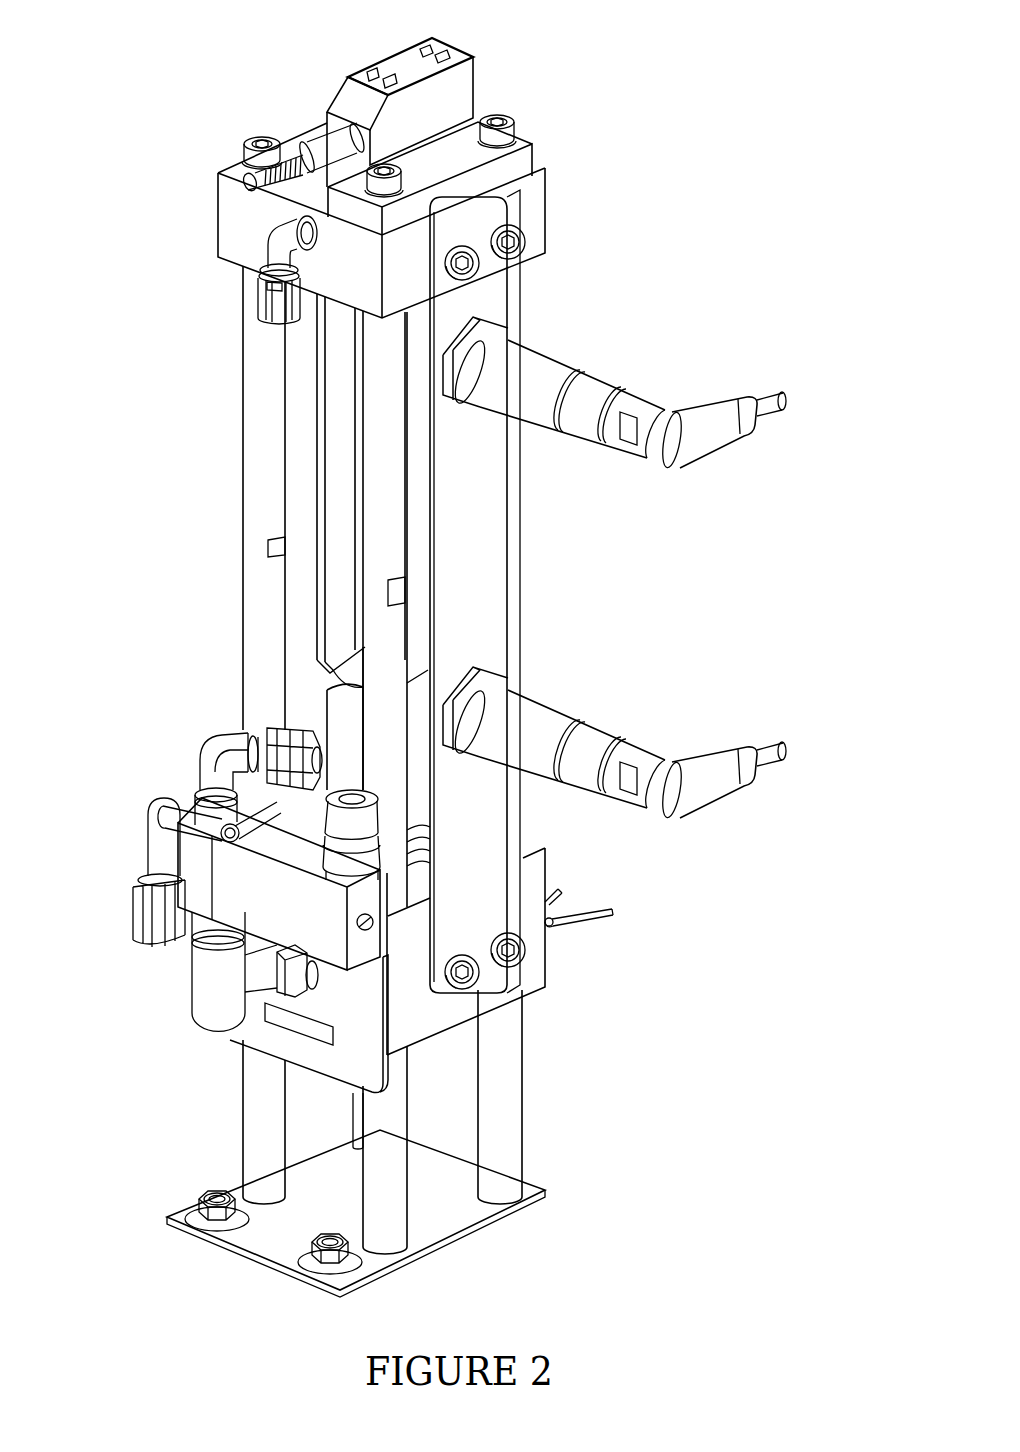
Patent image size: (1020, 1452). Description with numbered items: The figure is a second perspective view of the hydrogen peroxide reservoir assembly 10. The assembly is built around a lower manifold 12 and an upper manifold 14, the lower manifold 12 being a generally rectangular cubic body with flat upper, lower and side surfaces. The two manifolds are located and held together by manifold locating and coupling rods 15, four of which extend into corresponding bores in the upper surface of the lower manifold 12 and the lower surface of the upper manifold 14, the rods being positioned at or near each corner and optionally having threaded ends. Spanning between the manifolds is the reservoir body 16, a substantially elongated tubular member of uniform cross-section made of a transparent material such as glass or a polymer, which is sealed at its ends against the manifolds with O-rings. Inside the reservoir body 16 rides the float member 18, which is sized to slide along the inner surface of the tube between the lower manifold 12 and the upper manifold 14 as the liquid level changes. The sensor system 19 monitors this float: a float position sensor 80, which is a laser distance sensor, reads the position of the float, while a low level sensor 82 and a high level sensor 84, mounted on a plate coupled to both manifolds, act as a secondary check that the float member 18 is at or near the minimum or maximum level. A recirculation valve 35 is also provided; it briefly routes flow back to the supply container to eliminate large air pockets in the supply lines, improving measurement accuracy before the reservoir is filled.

The hydrogen peroxide reservoir assembly 10 is at (636, 94).
The lower manifold 12 is at (560, 958).
The upper manifold 14 is at (560, 212).
The manifold locating and coupling rods 15 is at (230, 498).
The reservoir body 16 is at (300, 415).
The float member 18 is at (308, 711).
The sensor system 19 is at (480, 55).
The recirculation valve 35 is at (228, 880).
The float position sensor 80 is at (384, 56).
The low level sensor 82 is at (618, 722).
The high level sensor 84 is at (614, 368).